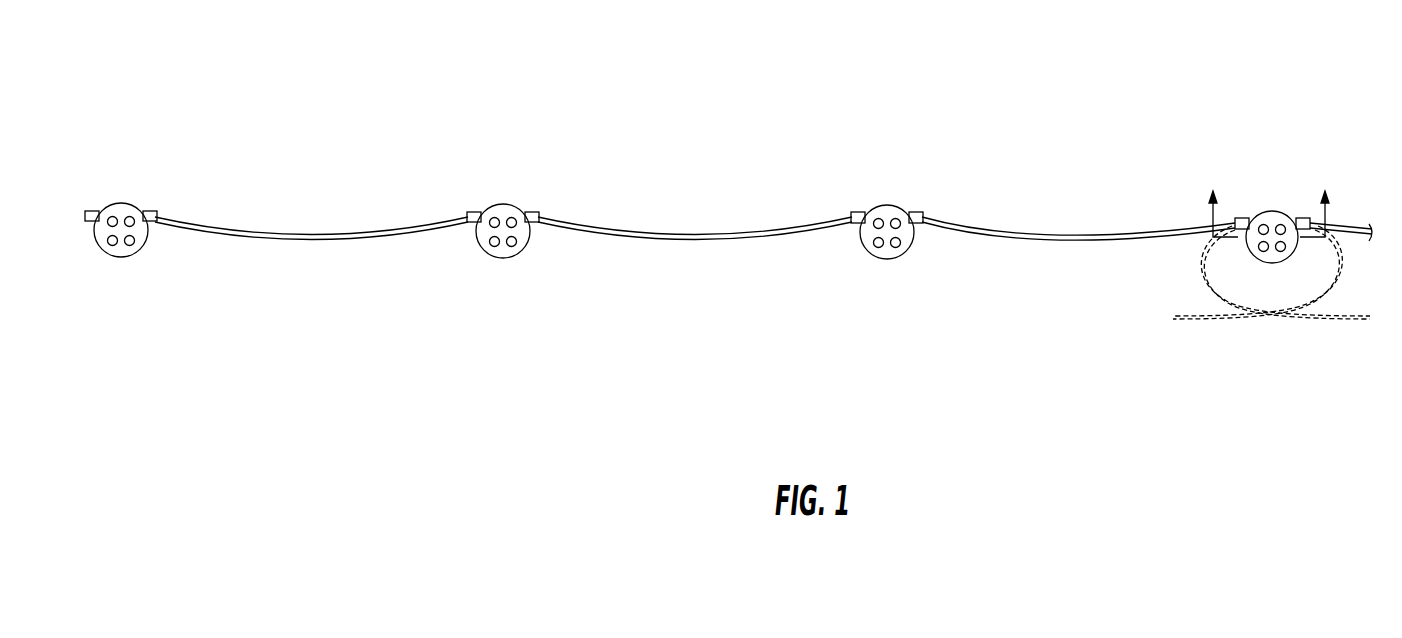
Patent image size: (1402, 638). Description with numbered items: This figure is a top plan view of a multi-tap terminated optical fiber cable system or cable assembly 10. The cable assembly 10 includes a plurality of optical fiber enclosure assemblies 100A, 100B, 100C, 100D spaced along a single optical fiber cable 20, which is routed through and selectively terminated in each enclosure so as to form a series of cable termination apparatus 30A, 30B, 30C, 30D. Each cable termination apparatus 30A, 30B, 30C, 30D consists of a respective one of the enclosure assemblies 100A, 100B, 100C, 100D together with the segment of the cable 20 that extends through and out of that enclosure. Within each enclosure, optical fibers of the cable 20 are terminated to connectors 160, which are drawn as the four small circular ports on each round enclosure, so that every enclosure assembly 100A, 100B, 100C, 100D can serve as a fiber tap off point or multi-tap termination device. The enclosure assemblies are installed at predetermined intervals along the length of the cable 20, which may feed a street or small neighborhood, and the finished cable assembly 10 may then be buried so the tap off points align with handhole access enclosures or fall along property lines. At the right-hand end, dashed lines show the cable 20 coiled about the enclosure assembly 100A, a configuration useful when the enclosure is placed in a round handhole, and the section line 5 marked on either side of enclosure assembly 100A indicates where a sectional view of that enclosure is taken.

The cable assembly 10 is at (1003, 79).
The optical fiber cable 20 is at (307, 242).
The cable termination apparatus 30A is at (1254, 141).
The cable termination apparatus 30B is at (892, 122).
The cable termination apparatus 30C is at (490, 166).
The cable termination apparatus 30D is at (136, 157).
The optical fiber enclosure assembly 100A is at (1270, 213).
The optical fiber enclosure assembly 100B is at (885, 213).
The optical fiber enclosure assembly 100C is at (505, 210).
The optical fiber enclosure assembly 100D is at (123, 217).
The connectors 160 is at (488, 253).
The section line 5- 5 is at (1267, 197).